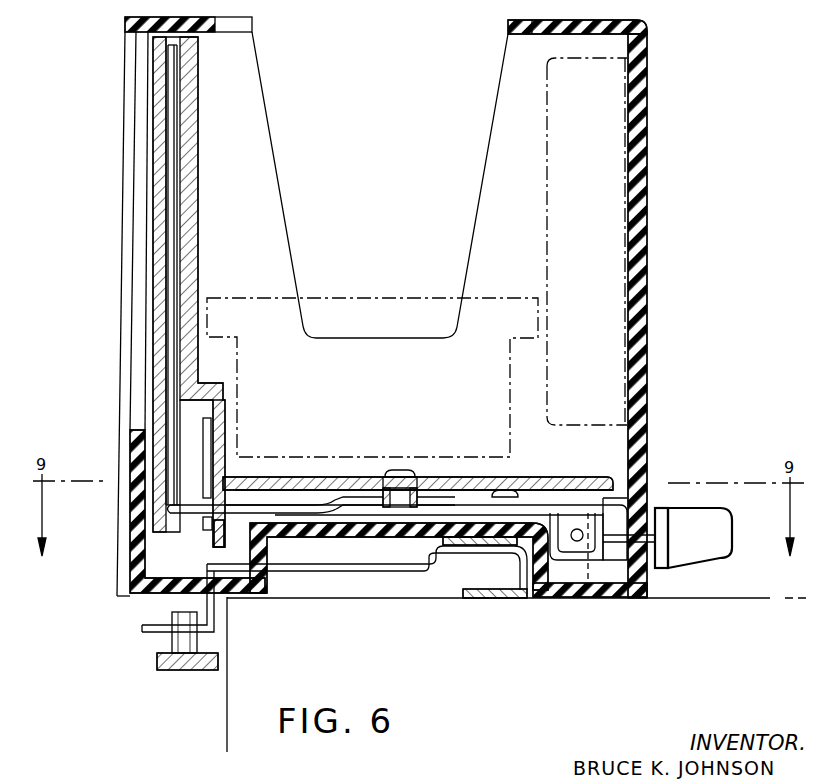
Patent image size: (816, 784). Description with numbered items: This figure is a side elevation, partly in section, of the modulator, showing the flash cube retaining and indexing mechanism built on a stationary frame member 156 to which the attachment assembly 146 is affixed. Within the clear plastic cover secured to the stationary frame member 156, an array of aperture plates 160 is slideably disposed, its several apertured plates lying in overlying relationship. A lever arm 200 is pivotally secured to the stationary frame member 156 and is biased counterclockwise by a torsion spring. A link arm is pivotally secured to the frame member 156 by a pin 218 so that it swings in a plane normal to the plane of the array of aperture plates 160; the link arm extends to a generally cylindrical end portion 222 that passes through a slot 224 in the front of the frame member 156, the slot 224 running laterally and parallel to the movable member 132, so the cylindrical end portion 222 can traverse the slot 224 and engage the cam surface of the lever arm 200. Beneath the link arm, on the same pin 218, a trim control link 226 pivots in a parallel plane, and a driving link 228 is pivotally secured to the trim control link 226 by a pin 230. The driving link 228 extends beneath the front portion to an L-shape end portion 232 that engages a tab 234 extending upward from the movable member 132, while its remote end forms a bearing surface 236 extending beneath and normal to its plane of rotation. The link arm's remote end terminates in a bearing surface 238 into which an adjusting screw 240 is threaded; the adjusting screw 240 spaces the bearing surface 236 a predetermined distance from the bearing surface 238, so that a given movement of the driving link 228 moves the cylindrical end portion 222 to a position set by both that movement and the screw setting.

The movable member 132 is at (188, 670).
The attachment assembly 146 is at (462, 602).
The stationary frame member 156 is at (223, 403).
The array of aperture plates 160 is at (160, 214).
The lever arm 200 is at (210, 437).
The pin 218 is at (401, 472).
The cylindrical end portion 222 is at (163, 533).
The slot 224 is at (228, 520).
The trim control link 226 is at (690, 512).
The driving link 228 is at (393, 568).
The pin 230 is at (505, 490).
The L-shape end portion 232 is at (207, 617).
The tab 234 is at (142, 628).
The bearing surface 236 is at (613, 560).
The bearing surface 238 is at (567, 543).
The adjusting screw 240 is at (580, 530).